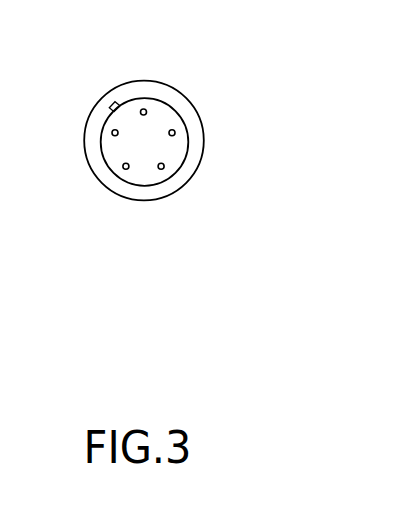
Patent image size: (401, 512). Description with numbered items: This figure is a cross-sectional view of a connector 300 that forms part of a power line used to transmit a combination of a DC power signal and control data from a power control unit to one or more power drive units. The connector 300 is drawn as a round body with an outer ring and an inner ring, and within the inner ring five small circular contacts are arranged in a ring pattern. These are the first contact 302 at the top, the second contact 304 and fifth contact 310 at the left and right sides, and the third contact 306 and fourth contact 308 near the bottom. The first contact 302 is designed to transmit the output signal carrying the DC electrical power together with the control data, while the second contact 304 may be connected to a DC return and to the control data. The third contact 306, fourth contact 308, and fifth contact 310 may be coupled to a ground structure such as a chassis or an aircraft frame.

The connector 300 is at (238, 68).
The first contact 302 is at (144, 109).
The second contact 304 is at (112, 133).
The third contact 306 is at (124, 169).
The fourth contact 308 is at (162, 169).
The fifth contact 310 is at (175, 131).